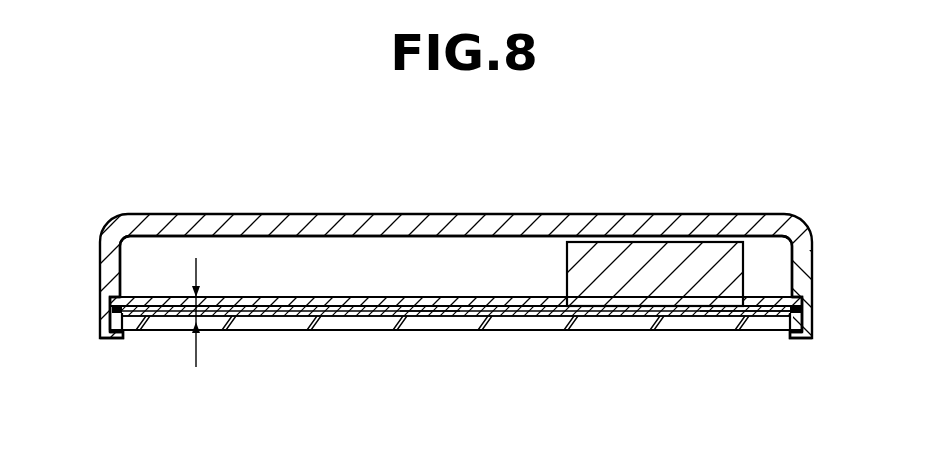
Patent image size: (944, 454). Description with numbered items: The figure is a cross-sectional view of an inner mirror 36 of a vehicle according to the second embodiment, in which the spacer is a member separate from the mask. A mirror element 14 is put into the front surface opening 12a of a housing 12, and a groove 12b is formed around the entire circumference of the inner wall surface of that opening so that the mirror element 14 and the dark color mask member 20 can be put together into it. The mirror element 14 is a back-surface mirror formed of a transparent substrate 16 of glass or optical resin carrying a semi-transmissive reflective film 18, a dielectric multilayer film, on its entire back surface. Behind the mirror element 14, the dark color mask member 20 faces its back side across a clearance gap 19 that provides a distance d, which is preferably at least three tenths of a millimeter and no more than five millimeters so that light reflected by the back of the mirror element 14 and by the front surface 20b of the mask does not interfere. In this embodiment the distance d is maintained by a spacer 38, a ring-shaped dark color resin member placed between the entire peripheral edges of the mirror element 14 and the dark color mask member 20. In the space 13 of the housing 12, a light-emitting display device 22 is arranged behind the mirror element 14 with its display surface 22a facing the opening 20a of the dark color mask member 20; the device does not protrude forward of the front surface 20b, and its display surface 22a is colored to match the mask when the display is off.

The housing 12 is at (410, 212).
The front surface opening 12a is at (790, 338).
The groove 12b is at (120, 297).
The space 13 is at (504, 262).
The mirror element 14 is at (372, 344).
The transparent substrate 16 is at (318, 330).
The semi-transmissive reflective film 18 is at (272, 320).
The clearance gap 19 is at (240, 302).
The dark color mask member 20 is at (153, 310).
The opening 20a is at (745, 320).
The front surface 20b is at (430, 309).
The light-emitting display device 22 is at (652, 257).
The display surface 22a is at (635, 306).
The inner mirror 36 is at (733, 142).
The spacer 38 is at (112, 310).
The distance d is at (190, 332).